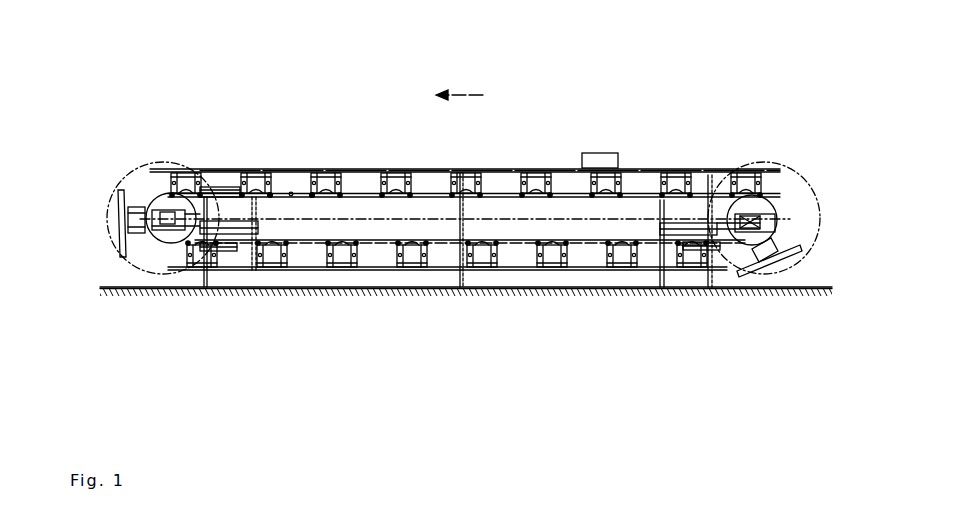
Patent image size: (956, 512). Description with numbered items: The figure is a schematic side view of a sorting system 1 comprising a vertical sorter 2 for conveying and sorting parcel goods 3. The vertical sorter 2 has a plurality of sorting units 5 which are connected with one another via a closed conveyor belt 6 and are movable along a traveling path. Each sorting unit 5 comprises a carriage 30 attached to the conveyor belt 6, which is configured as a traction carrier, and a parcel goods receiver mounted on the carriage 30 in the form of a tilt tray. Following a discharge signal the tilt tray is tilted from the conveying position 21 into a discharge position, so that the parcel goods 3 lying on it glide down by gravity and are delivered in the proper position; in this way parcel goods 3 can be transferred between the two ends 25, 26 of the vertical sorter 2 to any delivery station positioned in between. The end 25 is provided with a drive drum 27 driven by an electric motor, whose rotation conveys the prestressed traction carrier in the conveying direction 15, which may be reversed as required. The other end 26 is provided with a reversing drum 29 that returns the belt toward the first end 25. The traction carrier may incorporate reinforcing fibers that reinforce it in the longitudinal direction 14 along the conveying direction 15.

The sorting system 1 is at (174, 68).
The vertical sorter 2 is at (117, 101).
The parcel goods 3 is at (599, 153).
The sorting units 5 is at (236, 164).
The conveyor belt 6 is at (355, 192).
The longitudinal direction 14 is at (455, 90).
The conveying direction 15 is at (466, 88).
The conveying position 21 is at (398, 163).
The end 25 is at (164, 305).
The other end 26 is at (755, 305).
The drive drum 27 is at (160, 212).
The reversing drum 29 is at (764, 206).
The carriage 30 is at (301, 188).